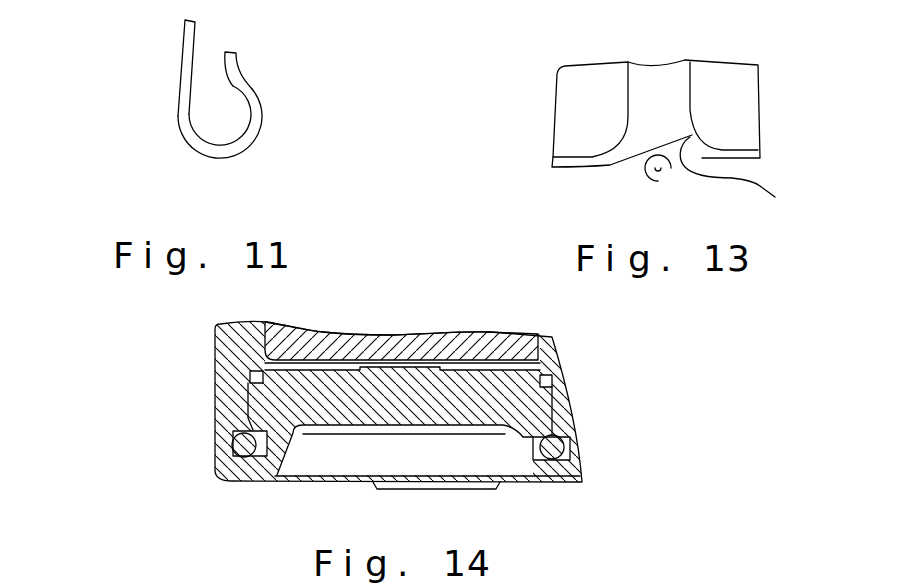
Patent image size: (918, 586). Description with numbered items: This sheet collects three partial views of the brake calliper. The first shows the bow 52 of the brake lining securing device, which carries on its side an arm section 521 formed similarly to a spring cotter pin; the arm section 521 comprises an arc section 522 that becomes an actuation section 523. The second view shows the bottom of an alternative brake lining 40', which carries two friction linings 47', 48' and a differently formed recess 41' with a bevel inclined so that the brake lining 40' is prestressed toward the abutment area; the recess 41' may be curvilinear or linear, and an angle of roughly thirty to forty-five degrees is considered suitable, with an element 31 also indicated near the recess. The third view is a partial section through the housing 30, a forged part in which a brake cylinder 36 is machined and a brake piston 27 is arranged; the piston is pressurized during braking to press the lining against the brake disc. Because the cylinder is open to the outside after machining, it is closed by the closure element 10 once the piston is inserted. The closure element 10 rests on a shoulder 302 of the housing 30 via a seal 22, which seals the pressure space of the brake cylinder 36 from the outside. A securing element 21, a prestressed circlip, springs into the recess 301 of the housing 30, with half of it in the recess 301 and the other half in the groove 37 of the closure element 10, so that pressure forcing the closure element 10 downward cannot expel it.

In FIG. 11, the bow 52 is at (195, 92).
In FIG. 11, the arm section 521 is at (180, 57).
In FIG. 11, the arc section 522 is at (240, 150).
In FIG. 11, the actuation section 523 is at (232, 62).
In FIG. 13, the brake lining 40' is at (682, 109).
In FIG. 13, the friction lining 47' is at (590, 109).
In FIG. 13, the friction lining 48' is at (722, 109).
In FIG. 13, the hole 31 is at (662, 175).
In FIG. 13, the recess 41' is at (746, 176).
In FIG. 14, the closure element 10 is at (417, 413).
In FIG. 14, the securing element 21 is at (560, 446).
In FIG. 14, the seal 22 is at (547, 378).
In FIG. 14, the brake piston 27 is at (402, 348).
In FIG. 14, the housing 30 is at (233, 373).
In FIG. 14, the recess 301 is at (237, 428).
In FIG. 14, the shoulder 302 is at (540, 366).
In FIG. 14, the brake cylinder 36 is at (538, 353).
In FIG. 14, the groove 37 is at (540, 450).